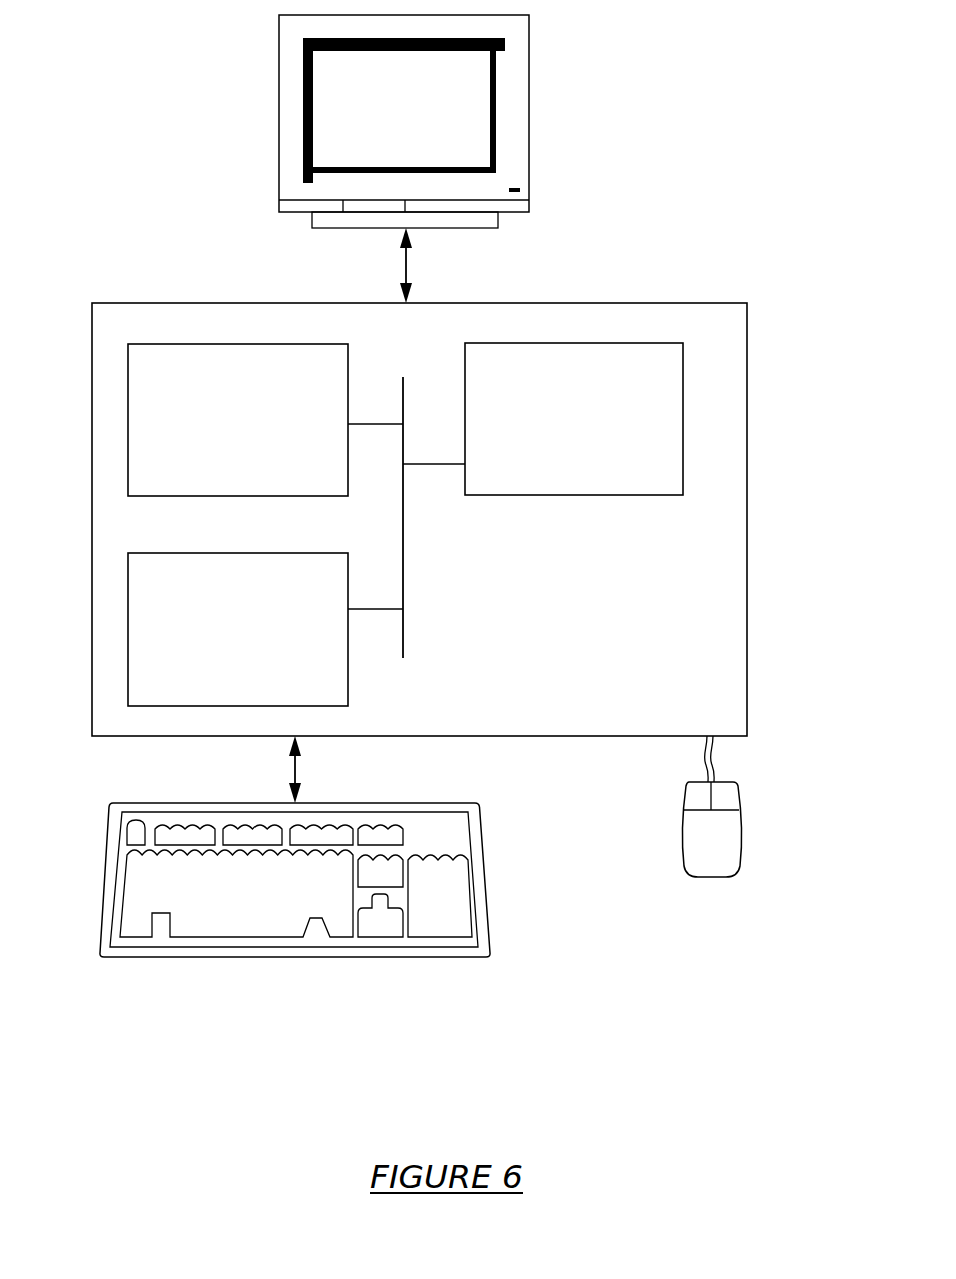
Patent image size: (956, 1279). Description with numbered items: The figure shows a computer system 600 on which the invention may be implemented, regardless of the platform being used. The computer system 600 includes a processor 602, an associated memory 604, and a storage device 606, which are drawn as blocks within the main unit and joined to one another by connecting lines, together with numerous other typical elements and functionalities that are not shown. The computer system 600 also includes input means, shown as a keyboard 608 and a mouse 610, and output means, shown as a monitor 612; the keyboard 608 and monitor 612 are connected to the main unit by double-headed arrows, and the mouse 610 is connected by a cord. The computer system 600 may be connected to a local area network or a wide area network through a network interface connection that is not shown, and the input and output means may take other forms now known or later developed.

The computer system 600 is at (766, 163).
The processor 602 is at (552, 433).
The memory 604 is at (216, 433).
The storage device 606 is at (216, 643).
The keyboard 608 is at (211, 910).
The mouse 610 is at (690, 853).
The monitor 612 is at (384, 125).